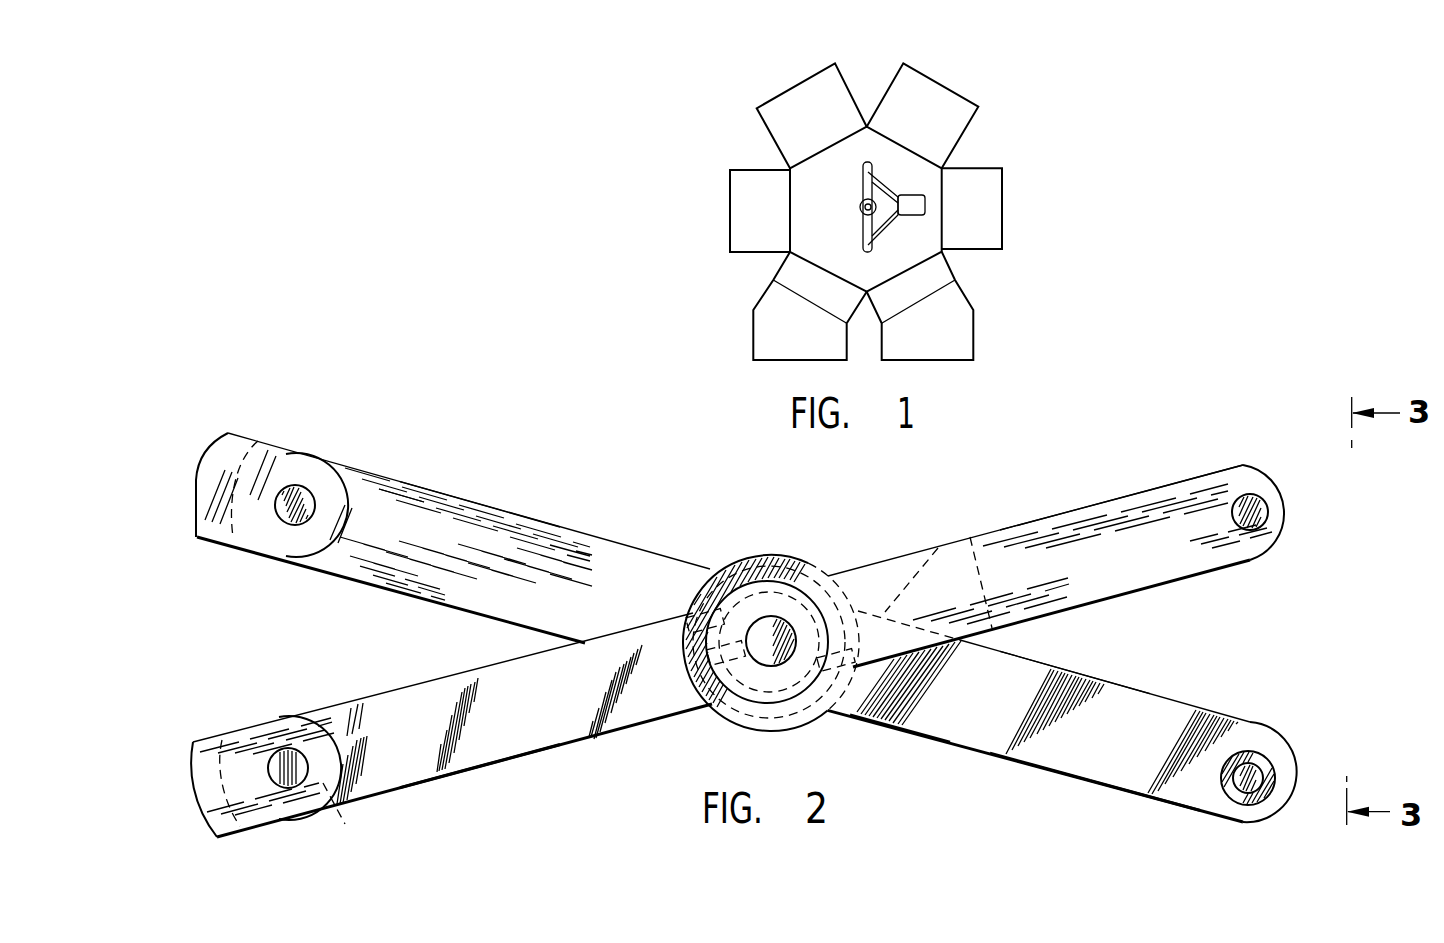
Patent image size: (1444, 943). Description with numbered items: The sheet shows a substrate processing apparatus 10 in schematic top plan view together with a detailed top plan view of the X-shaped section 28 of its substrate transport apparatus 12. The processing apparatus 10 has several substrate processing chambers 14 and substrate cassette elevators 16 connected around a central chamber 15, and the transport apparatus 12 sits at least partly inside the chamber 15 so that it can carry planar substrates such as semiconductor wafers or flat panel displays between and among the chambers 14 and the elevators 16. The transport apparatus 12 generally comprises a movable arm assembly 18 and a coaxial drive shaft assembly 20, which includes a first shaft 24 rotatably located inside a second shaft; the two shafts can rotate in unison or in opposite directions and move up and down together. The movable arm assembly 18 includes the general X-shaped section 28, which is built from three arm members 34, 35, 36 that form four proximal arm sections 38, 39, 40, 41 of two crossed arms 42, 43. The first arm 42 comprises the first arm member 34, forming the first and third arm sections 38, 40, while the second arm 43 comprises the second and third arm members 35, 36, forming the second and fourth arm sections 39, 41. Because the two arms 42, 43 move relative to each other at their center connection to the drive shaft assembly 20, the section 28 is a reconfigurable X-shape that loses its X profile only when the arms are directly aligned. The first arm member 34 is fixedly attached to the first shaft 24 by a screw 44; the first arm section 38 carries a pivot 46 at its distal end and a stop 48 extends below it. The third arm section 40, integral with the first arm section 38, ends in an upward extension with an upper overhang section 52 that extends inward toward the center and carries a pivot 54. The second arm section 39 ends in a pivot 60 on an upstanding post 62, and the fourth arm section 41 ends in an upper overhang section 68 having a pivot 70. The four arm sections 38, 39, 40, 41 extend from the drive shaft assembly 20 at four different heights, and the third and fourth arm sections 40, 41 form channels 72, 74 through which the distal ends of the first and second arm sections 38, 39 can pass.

In FIG. 1, the substrate processing apparatus 10 is at (832, 196).
In FIG. 1, the substrate transport apparatus 12 is at (922, 193).
In FIG. 1, the substrate processing chambers 14 is at (845, 74).
In FIG. 1, the chamber 15 is at (804, 240).
In FIG. 1, the substrate cassette elevators 16 is at (753, 328).
In FIG. 2, the movable arm assembly 18 is at (509, 503).
In FIG. 2, the coaxial drive shaft assembly 20 is at (765, 630).
In FIG. 2, the first shaft 24 is at (786, 625).
In FIG. 2, the X-shaped section 28 is at (900, 729).
In FIG. 2, the first arm member 34 is at (1023, 524).
In FIG. 2, the second arm member 35 is at (1007, 759).
In FIG. 2, the third arm member 36 is at (455, 497).
In FIG. 2, the first arm section 38 is at (1087, 508).
In FIG. 2, the second arm section 39 is at (1087, 781).
In FIG. 2, the third arm section 40 is at (463, 773).
In FIG. 2, the fourth arm section 41 is at (405, 478).
In FIG. 2, the first arm 42 is at (1165, 488).
In FIG. 2, the second arm 43 is at (1131, 688).
In FIG. 2, the screw 44 is at (727, 702).
In FIG. 2, the pivot 46 is at (1248, 496).
In FIG. 2, the stop 48 is at (940, 580).
In FIG. 2, the upper overhang section 52 is at (284, 815).
In FIG. 2, the pivot 54 is at (285, 751).
In FIG. 2, the pivot 60 is at (1258, 789).
In FIG. 2, the upstanding post 62 is at (1240, 806).
In FIG. 2, the upper overhang section 68 is at (265, 453).
In FIG. 2, the pivot 70 is at (297, 522).
In FIG. 2, the channel 72 is at (298, 468).
In FIG. 2, the channel 74 is at (345, 819).